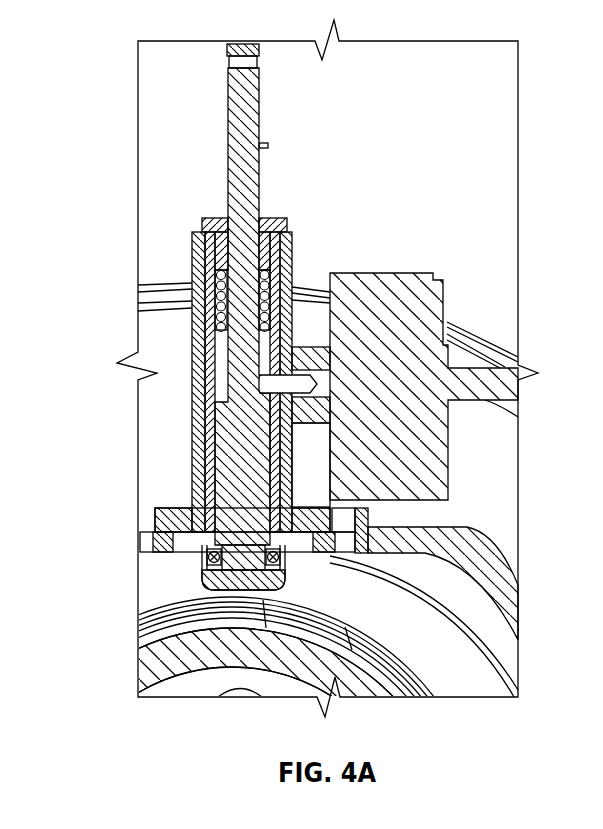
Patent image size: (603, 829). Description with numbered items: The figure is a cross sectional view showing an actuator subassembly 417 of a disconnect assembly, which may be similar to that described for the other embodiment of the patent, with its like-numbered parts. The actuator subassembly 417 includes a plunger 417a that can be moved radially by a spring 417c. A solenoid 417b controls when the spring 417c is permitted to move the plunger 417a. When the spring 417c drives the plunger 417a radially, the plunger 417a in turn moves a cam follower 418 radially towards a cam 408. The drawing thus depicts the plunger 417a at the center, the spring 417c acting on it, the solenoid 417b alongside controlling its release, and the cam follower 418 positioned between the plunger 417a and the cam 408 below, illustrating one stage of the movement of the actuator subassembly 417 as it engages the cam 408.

The actuator subassembly 417 is at (328, 307).
The plunger 417a is at (237, 450).
The solenoid 417b is at (400, 340).
The spring 417c is at (195, 270).
The cam follower 418 is at (202, 581).
The cam 408 is at (232, 600).